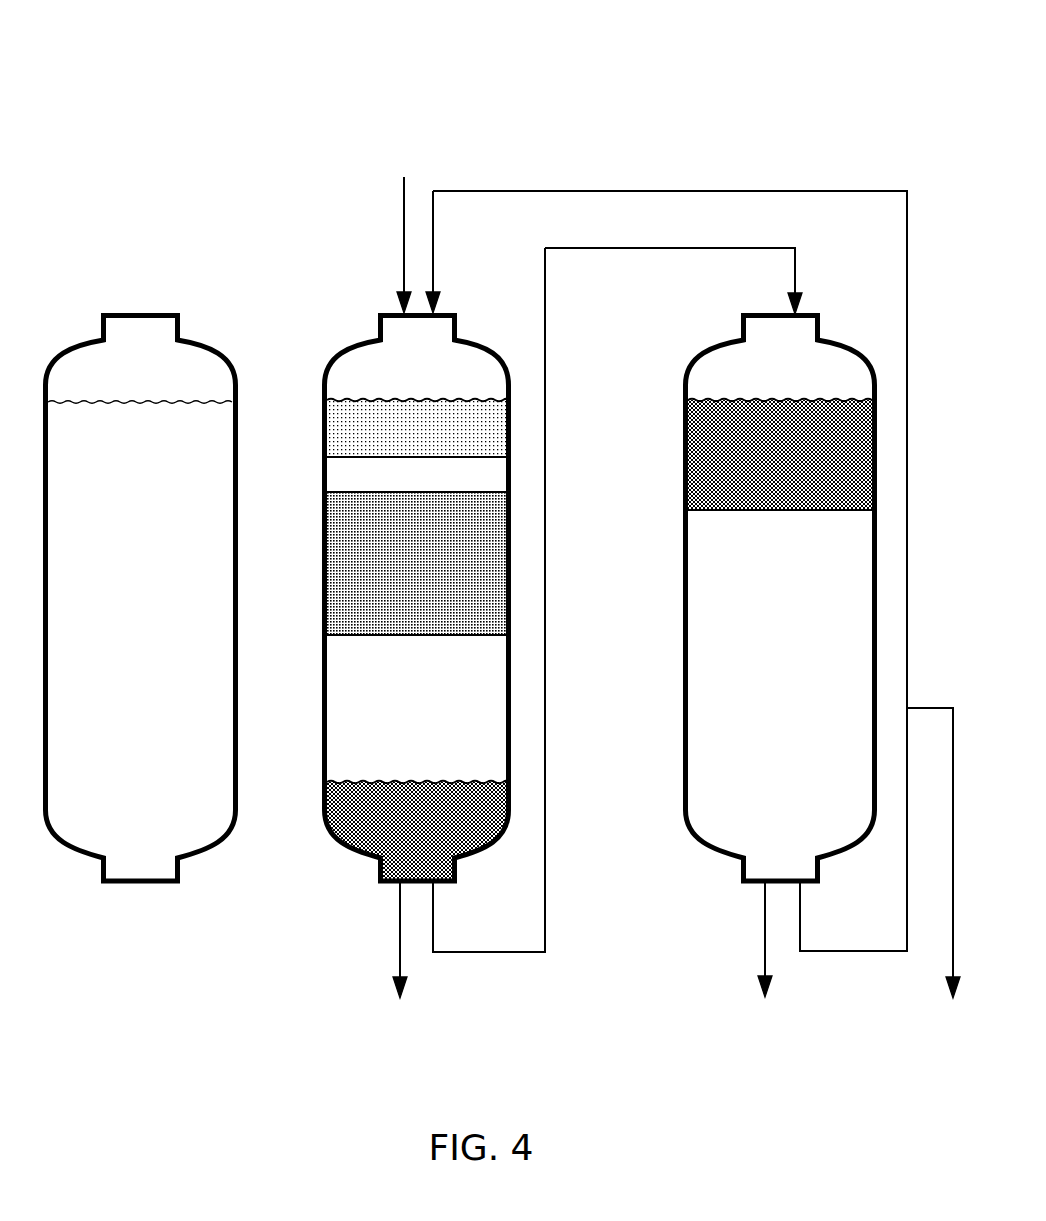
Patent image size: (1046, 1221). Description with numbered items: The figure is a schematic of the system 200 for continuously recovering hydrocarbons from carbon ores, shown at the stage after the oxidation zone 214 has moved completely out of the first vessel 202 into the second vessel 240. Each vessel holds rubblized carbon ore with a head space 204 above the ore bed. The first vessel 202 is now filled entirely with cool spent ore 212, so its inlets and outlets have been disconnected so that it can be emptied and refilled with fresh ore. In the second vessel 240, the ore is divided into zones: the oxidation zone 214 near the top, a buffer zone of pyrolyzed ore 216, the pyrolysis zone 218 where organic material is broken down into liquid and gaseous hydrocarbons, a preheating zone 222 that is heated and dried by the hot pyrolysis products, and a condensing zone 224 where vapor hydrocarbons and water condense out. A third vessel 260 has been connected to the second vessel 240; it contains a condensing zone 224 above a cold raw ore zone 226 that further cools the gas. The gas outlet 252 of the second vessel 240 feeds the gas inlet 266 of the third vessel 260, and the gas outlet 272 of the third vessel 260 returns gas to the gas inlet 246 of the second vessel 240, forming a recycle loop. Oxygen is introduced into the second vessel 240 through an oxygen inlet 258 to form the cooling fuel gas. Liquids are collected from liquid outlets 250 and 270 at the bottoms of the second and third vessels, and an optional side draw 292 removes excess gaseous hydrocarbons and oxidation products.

The system 200 is at (162, 88).
The first vessel 202 is at (133, 313).
The head space 204 is at (120, 374).
The cooled spent ore 212 is at (120, 622).
The oxidation zone 214 is at (503, 433).
The pyrolyzed ore 216 is at (396, 485).
The pyrolysis zone 218 is at (395, 575).
The preheating zone 222 is at (396, 725).
The condensing zone 224 is at (395, 845).
The cold raw ore zone 226 is at (760, 697).
The second vessel 240 is at (512, 390).
The gas inlet 246 is at (432, 268).
The liquid outlet 250 is at (398, 968).
The gas outlet 252 is at (465, 952).
The oxygen inlet 258 is at (403, 219).
The third vessel 260 is at (683, 660).
The gas inlet 266 is at (756, 248).
The liquid outlet 270 is at (762, 962).
The gas outlet 272 is at (856, 952).
The side draw 292 is at (953, 935).